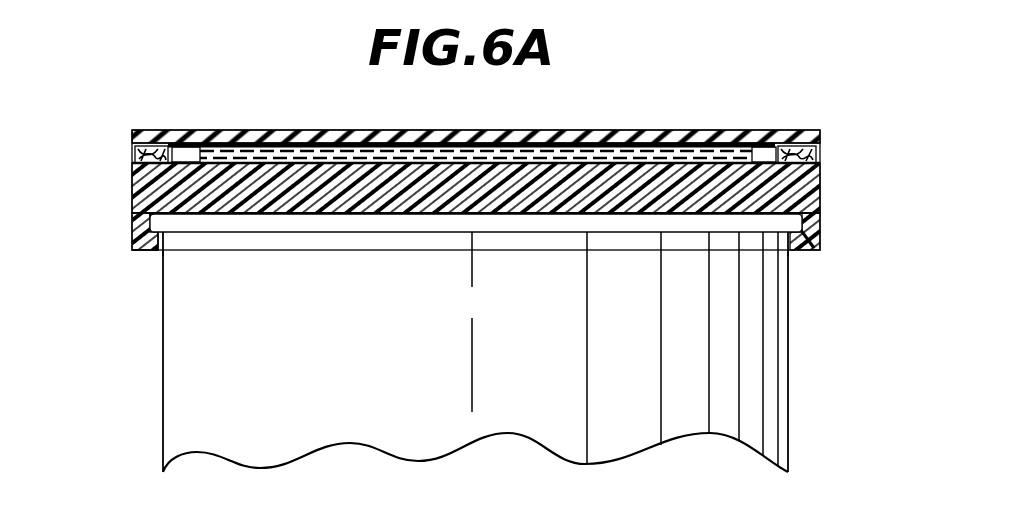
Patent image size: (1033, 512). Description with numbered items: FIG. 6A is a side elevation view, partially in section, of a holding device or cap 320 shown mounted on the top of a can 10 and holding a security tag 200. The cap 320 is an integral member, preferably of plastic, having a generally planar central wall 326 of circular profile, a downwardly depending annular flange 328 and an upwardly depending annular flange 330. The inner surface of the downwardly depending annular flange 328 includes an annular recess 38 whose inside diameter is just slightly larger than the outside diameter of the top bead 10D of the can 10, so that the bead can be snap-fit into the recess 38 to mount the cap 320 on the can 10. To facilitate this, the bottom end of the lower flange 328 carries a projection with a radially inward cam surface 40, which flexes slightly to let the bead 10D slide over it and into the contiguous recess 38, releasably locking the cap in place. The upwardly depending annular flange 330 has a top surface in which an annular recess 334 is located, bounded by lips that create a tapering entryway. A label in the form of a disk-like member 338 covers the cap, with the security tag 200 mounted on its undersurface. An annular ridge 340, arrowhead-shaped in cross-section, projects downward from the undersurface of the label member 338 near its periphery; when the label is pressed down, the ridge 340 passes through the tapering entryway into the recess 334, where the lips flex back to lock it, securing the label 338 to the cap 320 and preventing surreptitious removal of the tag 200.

The can 10 is at (158, 382).
The top bead 10D is at (222, 222).
The annular recess 38 is at (135, 236).
The cam surface 40 is at (155, 250).
The security tag 200 is at (169, 152).
The holding device or cap 320 is at (664, 97).
The central wall 326 is at (371, 200).
The downwardly depending annular flange 328 is at (820, 233).
The upwardly depending annular flange 330 is at (818, 151).
The annular recess 334 is at (137, 165).
The label member 338 is at (700, 130).
The annular ridge 340 is at (136, 156).